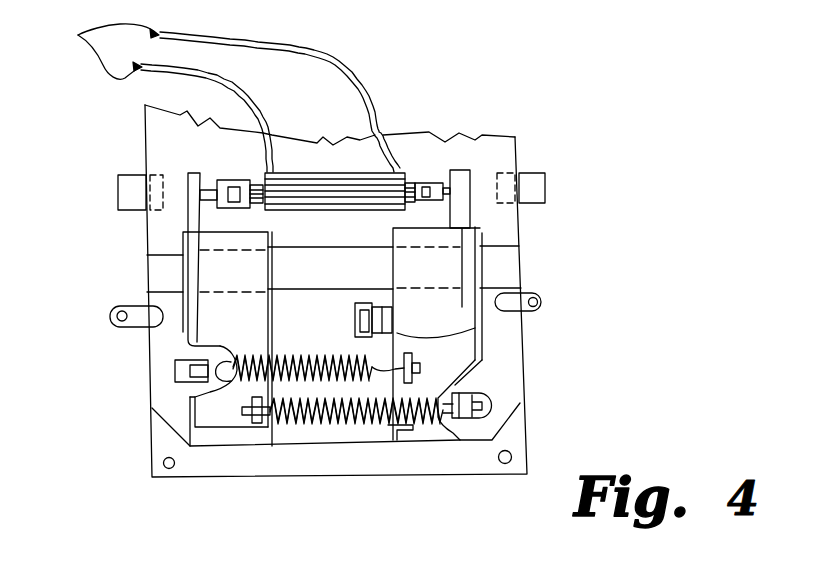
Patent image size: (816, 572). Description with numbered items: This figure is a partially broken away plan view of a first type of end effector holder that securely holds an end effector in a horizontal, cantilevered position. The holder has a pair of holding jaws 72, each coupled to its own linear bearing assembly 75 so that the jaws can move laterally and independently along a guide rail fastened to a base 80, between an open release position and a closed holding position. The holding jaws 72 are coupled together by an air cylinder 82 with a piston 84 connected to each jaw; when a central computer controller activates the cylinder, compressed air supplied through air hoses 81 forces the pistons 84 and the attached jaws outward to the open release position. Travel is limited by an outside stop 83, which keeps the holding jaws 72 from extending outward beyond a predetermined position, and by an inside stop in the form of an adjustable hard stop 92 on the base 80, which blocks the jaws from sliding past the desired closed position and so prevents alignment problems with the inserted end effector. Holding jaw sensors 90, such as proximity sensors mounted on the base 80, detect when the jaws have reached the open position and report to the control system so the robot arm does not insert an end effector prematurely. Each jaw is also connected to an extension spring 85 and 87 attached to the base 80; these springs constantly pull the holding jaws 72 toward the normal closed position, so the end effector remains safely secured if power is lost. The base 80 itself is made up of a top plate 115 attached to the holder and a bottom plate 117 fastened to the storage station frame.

The holding jaws 72 is at (505, 260).
The linear bearing assembly 75 is at (212, 278).
The base 80 is at (148, 383).
The air hoses 81 is at (222, 94).
The air cylinder 82 is at (278, 194).
The outside stop 83 is at (118, 192).
The piston 84 is at (258, 178).
The extension spring 85 is at (382, 422).
The extension spring 87 is at (315, 420).
The holding jaw sensors 90 is at (110, 325).
The adjustable hard stop 92 is at (396, 325).
The top plate 115 is at (513, 376).
The bottom plate 117 is at (517, 437).